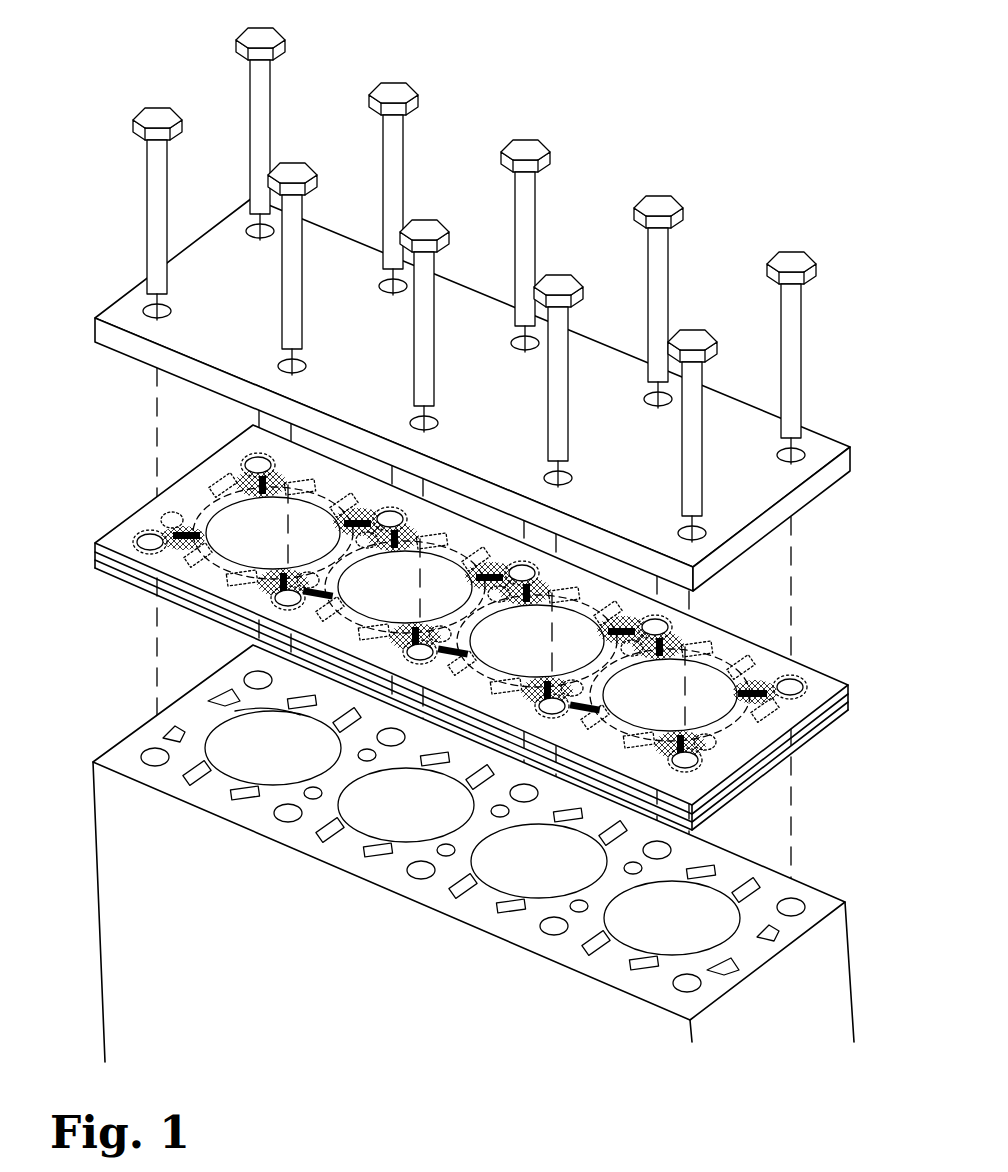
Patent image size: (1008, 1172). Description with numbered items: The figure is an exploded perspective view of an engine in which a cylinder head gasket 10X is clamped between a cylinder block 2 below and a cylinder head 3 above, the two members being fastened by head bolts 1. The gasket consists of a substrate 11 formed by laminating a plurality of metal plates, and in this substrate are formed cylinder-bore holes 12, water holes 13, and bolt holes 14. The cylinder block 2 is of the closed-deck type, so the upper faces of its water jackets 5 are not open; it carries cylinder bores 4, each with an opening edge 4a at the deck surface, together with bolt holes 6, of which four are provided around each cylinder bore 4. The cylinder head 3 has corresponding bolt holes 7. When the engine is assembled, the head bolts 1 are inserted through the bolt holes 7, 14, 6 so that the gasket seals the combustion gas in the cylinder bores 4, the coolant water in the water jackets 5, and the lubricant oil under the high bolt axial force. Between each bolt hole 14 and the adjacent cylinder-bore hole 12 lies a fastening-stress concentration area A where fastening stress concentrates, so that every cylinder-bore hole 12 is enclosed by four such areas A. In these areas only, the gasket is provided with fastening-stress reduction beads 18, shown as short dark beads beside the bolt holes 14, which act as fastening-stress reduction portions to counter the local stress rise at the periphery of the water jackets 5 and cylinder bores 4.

The head bolt 1 is at (235, 44).
The cylinder block 2 is at (136, 731).
The cylinder head 3 is at (126, 302).
The cylinder bore 4 is at (283, 774).
The cylinder bore opening edge 4a is at (267, 711).
The water jacket 5 is at (170, 728).
The bolt hole of cylinder block 6 is at (148, 765).
The bolt hole of cylinder head 7 is at (171, 311).
The cylinder head gasket 10X is at (148, 444).
The substrate 11 is at (95, 533).
The cylinder-bore hole 12 is at (283, 549).
The water hole 13 is at (168, 512).
The bolt hole 14 is at (147, 534).
The fastening-stress reduction bead 18 is at (190, 530).
The fastening-stress concentration area A is at (172, 553).